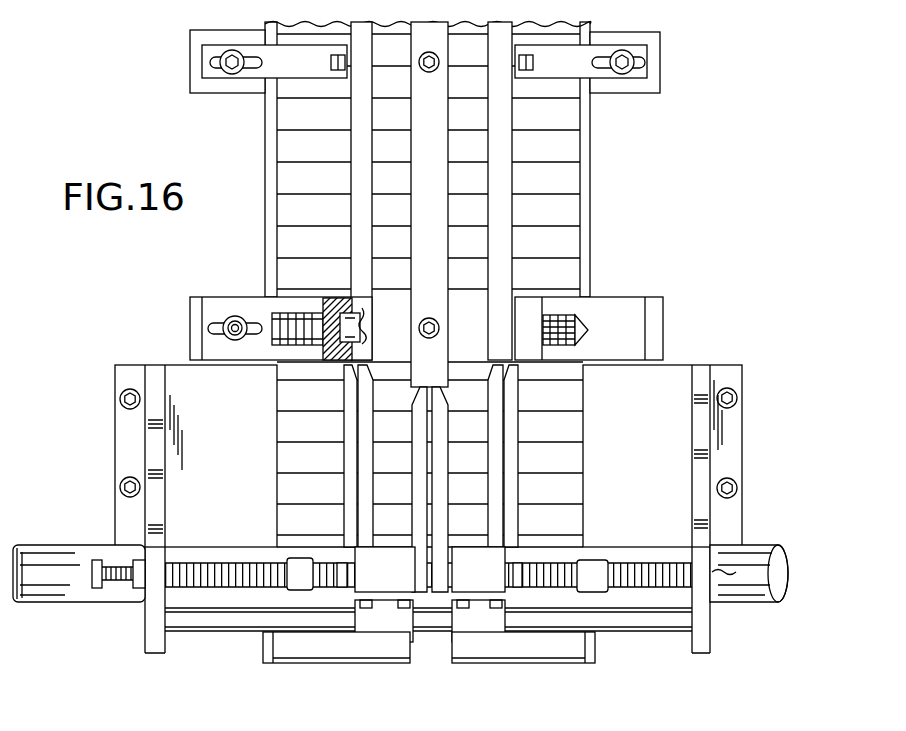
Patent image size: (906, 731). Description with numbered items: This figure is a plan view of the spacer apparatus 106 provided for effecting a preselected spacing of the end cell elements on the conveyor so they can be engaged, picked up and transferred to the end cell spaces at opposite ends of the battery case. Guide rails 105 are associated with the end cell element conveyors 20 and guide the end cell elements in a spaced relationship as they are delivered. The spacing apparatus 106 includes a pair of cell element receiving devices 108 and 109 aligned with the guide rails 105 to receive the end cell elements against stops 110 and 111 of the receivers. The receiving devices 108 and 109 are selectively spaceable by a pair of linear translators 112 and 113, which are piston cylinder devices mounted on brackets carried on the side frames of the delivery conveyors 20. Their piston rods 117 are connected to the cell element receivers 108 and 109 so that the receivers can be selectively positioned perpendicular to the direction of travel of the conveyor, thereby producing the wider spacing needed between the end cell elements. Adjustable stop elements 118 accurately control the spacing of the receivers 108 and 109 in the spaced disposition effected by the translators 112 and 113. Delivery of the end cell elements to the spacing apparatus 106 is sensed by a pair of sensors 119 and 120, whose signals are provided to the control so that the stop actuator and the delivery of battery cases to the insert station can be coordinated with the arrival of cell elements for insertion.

The end cell element conveyor 20 is at (563, 218).
The guide rails 105 is at (497, 163).
The spacer apparatus 106 is at (748, 442).
The cell element receiving device 108 is at (348, 639).
The cell element receiving device 109 is at (514, 639).
The stop 110 is at (378, 575).
The stop 111 is at (480, 575).
The linear translator 112 is at (78, 548).
The linear translator 113 is at (758, 548).
The piston rod 117 is at (660, 580).
The adjustable stop element 118 is at (296, 580).
The sensor 119 is at (323, 315).
The sensor 120 is at (578, 315).